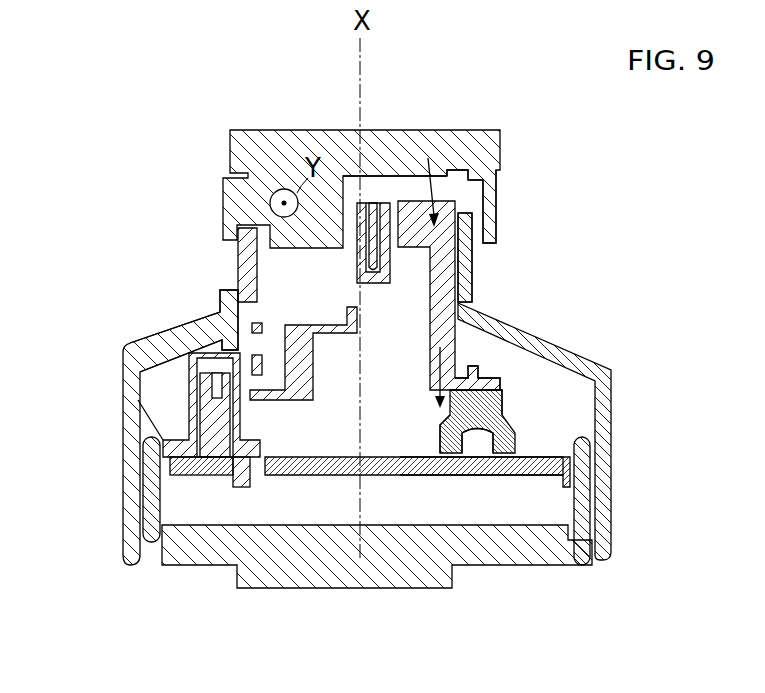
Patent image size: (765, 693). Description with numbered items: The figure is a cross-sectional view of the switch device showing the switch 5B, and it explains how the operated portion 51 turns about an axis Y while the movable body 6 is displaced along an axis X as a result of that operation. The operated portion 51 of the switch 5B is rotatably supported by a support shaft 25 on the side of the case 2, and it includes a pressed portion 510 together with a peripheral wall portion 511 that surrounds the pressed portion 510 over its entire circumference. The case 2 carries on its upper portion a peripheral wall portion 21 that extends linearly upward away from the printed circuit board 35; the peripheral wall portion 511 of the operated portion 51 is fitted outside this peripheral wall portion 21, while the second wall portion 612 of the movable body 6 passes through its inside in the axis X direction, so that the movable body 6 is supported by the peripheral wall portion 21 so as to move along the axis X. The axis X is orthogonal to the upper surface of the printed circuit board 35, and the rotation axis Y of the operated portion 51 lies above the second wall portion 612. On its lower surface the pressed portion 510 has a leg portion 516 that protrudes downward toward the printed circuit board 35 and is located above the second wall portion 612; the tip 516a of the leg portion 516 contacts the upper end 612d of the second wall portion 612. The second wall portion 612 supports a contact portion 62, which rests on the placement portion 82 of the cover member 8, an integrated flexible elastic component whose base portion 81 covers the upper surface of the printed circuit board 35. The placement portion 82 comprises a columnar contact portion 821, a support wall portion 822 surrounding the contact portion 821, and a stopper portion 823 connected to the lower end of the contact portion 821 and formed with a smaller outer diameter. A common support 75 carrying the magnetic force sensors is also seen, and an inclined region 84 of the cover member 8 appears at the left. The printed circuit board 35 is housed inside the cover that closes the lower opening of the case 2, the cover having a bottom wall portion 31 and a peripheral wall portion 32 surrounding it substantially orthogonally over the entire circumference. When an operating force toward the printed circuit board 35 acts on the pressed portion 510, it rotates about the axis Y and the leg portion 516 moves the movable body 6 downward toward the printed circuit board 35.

The switch 5B is at (103, 155).
The operated portion 51 is at (229, 126).
The pressed portion 510 is at (332, 145).
The leg portion 516 is at (462, 172).
The tip 516a is at (470, 181).
The peripheral wall portion 511 is at (497, 228).
The upper end 612d is at (427, 163).
The support shaft 25 is at (270, 204).
The second wall portion 612 is at (440, 321).
The contact portion 62 is at (497, 378).
The peripheral wall portion 21 is at (473, 262).
The movable body 6 is at (470, 293).
The case 2 is at (618, 367).
The peripheral wall portion 32 is at (591, 498).
The bottom wall portion 31 is at (312, 588).
The cover member 8 is at (160, 437).
The cover inclined portion 84 is at (183, 335).
The support 75 is at (217, 476).
The printed circuit board 35 is at (300, 476).
The base portion 81 is at (415, 459).
The placement portion 82 is at (503, 396).
The contact portion 821 is at (488, 403).
The support wall portion 822 is at (440, 432).
The stopper portion 823 is at (472, 438).